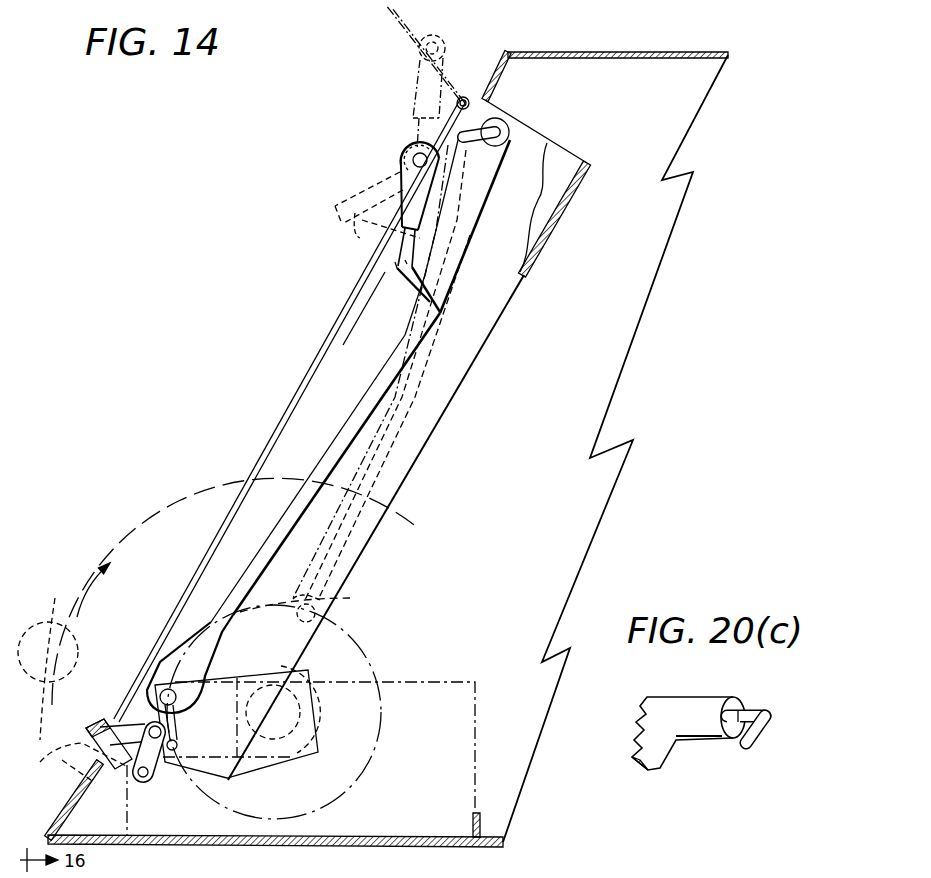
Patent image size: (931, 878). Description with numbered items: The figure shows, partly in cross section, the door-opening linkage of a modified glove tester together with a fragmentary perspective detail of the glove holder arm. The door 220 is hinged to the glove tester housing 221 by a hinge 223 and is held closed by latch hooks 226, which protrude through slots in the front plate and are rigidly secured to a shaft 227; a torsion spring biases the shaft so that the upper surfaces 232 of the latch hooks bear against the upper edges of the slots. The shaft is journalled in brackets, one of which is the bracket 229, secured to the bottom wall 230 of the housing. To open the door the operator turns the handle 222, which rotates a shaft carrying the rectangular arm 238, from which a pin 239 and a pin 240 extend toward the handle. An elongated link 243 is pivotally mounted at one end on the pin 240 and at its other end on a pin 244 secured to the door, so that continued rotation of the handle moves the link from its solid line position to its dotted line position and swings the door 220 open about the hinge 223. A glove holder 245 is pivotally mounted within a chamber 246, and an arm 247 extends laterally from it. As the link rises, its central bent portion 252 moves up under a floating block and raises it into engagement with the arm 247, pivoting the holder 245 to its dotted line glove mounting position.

In FIG. 14, the glove tester housing 221 is at (652, 60).
In FIG. 14, the bottom wall 230 is at (370, 847).
In FIG. 14, the bracket 229 is at (475, 724).
In FIG. 14, the arm 238 is at (235, 648).
In FIG. 14, the handle 222 is at (35, 620).
In FIG. 14, the door 220 is at (392, 32).
In FIG. 14, the hinge 223 is at (467, 97).
In FIG. 14, the pin 244 is at (437, 40).
In FIG. 14, the glove holder 245 is at (488, 163).
In FIG. 20c, the glove holder 245 is at (697, 705).
In FIG. 14, the arm 247 is at (507, 120).
In FIG. 20c, the arm 247 is at (775, 720).
In FIG. 14, the chamber 246 is at (370, 300).
In FIG. 14, the central bent portion 252 is at (418, 297).
In FIG. 14, the elongated link 243 is at (402, 388).
In FIG. 14, the pin 240 is at (322, 608).
In FIG. 14, the upper surfaces 232 is at (120, 720).
In FIG. 14, the latch hooks 226 is at (72, 752).
In FIG. 14, the shaft 227 is at (141, 780).
In FIG. 14, the pin 239 is at (177, 745).